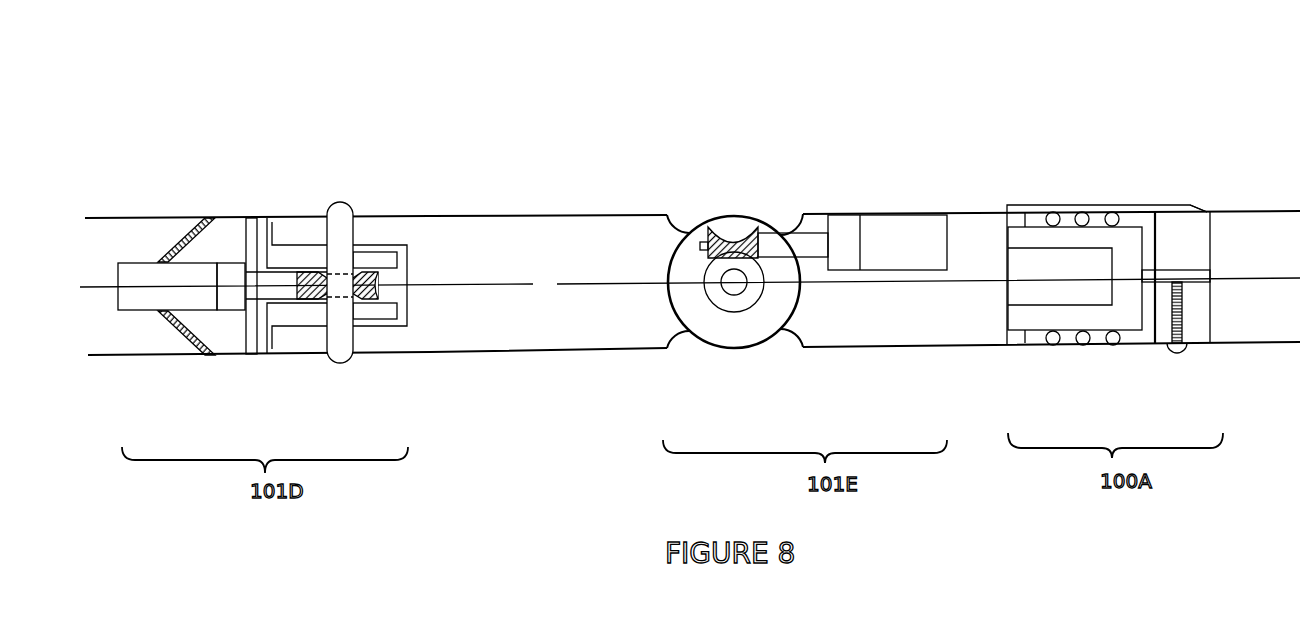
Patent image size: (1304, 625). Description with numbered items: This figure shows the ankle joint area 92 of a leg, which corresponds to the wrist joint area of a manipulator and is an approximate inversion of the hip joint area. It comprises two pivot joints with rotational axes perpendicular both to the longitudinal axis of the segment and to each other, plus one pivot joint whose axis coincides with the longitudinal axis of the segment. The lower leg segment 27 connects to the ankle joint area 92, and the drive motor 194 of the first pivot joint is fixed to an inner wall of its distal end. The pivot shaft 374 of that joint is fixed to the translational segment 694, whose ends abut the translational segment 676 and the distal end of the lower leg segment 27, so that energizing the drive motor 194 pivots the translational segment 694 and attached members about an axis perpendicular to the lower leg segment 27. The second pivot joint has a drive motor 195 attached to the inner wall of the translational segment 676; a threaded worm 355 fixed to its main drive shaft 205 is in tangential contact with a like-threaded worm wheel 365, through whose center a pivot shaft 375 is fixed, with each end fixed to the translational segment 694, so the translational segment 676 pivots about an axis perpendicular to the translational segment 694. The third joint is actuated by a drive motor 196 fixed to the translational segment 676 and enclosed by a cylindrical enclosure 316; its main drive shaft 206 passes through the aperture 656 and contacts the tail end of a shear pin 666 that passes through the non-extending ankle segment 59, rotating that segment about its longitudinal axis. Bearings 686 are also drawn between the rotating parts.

The lower leg segment 27 is at (107, 233).
The drive motor 194 is at (136, 271).
The pivot shaft 374 is at (345, 208).
The translational segment 694 is at (498, 217).
The ankle joint area 92 is at (642, 195).
The threaded worm 355 is at (737, 238).
The main drive shaft 205 is at (803, 232).
The drive motor 195 is at (892, 225).
The worm wheel 365 is at (718, 292).
The pivot shaft 375 is at (732, 289).
The translational segment 676 is at (978, 338).
The drive motor 196 is at (1055, 257).
The cylindrical enclosure 316 is at (1130, 223).
The aperture 656 is at (1158, 267).
The non-extending ankle segment 59 is at (1202, 205).
The main drive shaft 206 is at (1183, 267).
The ball bearings 686 is at (1118, 345).
The shear pin 666 is at (1185, 328).